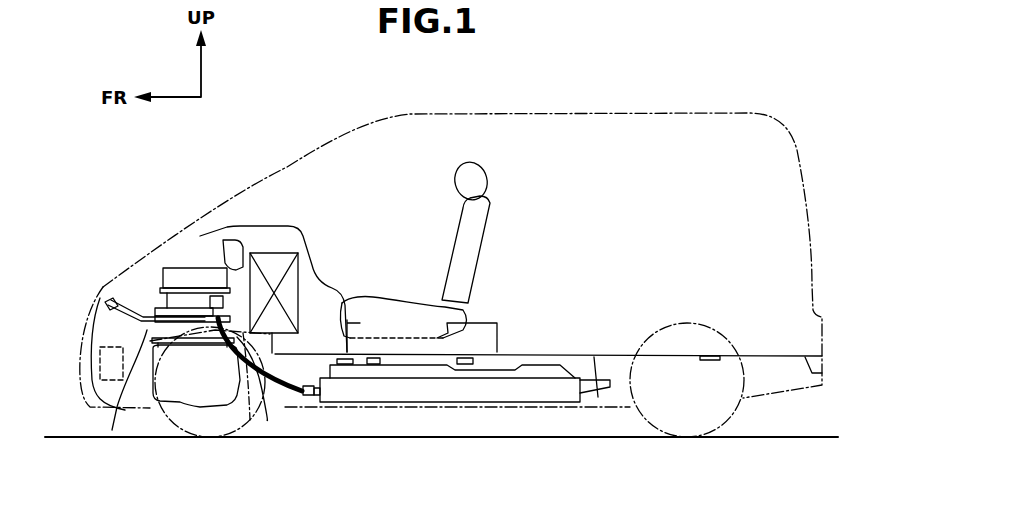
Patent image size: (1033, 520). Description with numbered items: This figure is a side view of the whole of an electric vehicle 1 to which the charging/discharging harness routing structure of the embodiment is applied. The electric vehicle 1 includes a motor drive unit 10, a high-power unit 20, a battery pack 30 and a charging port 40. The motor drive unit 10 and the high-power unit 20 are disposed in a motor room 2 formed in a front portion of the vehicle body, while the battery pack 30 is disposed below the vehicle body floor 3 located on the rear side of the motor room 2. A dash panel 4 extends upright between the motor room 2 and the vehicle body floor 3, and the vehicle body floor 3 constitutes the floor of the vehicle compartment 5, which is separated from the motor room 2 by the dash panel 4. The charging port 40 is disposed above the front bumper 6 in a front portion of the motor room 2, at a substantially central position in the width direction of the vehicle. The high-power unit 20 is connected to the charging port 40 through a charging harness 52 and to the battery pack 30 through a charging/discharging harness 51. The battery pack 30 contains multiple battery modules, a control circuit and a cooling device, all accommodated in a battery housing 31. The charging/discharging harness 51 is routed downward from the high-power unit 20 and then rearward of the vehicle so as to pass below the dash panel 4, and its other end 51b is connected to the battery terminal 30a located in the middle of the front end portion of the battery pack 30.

The electric vehicle 1 is at (318, 136).
The motor room 2 is at (150, 304).
The vehicle body floor 3 is at (577, 352).
The dash panel 4 is at (245, 290).
The vehicle compartment 5 is at (570, 200).
The front bumper 6 is at (90, 345).
The motor drive unit 10 is at (181, 377).
The high-power unit 20 is at (194, 268).
The battery pack 30 is at (477, 397).
The battery terminal 30a is at (320, 397).
The battery housing 31 is at (433, 403).
The charging port 40 is at (92, 288).
The charging/discharging harness 51 is at (287, 397).
The other end of charging/discharging harness 51b is at (307, 398).
The charging harness 52 is at (147, 338).